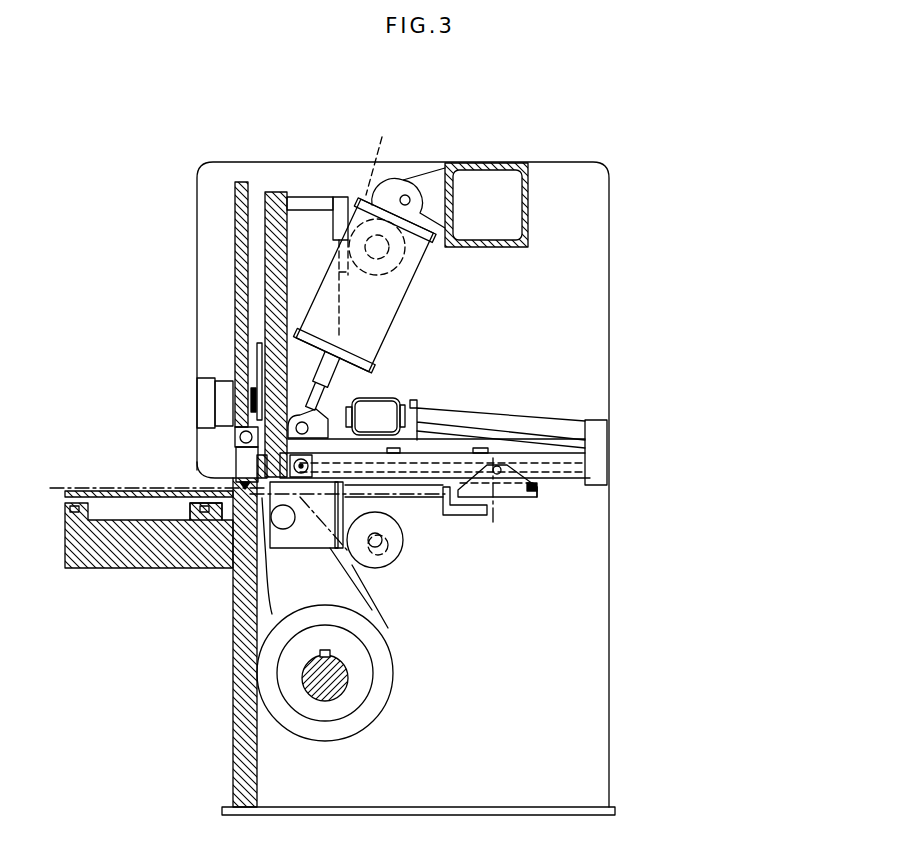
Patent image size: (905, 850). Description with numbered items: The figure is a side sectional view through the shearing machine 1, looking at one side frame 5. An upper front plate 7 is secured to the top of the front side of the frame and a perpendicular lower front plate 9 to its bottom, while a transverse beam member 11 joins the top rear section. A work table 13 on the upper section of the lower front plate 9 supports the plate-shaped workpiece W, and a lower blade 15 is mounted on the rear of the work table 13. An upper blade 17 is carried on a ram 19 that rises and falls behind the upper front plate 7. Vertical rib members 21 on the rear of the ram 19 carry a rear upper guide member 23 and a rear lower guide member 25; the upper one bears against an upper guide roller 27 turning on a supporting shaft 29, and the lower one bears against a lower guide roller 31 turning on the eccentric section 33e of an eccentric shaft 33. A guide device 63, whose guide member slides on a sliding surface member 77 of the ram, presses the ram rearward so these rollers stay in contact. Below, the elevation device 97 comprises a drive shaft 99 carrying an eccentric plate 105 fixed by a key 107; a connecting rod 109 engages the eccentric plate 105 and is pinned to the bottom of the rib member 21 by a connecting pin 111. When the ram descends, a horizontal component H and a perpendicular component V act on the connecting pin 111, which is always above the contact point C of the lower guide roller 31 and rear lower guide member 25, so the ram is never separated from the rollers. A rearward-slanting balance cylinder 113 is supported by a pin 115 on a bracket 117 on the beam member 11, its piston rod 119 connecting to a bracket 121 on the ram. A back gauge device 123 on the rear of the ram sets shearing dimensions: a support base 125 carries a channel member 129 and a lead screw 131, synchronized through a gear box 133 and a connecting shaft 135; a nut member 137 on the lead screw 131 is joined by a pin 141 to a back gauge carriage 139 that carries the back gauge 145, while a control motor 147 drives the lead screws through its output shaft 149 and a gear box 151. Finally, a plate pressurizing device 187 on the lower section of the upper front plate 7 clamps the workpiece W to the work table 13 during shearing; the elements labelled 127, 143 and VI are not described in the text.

The shearing machine 1 is at (523, 130).
The side frame 5 is at (418, 728).
The upper front plate 7 is at (237, 211).
The lower front plate 9 is at (236, 752).
The beam member 11 is at (528, 188).
The work table 13 is at (98, 560).
The lower blade 15 is at (252, 512).
The upper blade 17 is at (255, 466).
The ram 19 is at (270, 258).
The rib member 21 is at (310, 210).
The rear upper guide member 23 is at (343, 198).
The rear lower guide member 25 is at (376, 587).
The upper guide roller 27 is at (381, 153).
The supporting shaft 29 is at (398, 253).
The lower guide roller 31 is at (387, 566).
The eccentric shaft 33 is at (383, 540).
The eccentric section 33e is at (390, 550).
The guide device 63 is at (194, 373).
The sliding surface member 77 is at (257, 345).
The elevation device 97 is at (399, 684).
The drive shaft 99 is at (345, 696).
The eccentric plate 105 is at (365, 688).
The key 107 is at (297, 691).
The connecting rod 109 is at (390, 645).
The connecting pin 111 is at (287, 529).
The balance cylinder 113 is at (404, 289).
The pin 115 is at (407, 195).
The bracket 117 is at (433, 187).
The piston rod 119 is at (330, 368).
The bracket 121 is at (313, 456).
The back gauge device 123 is at (534, 500).
The support base 125 is at (507, 430).
The lower slide rail 127 is at (410, 490).
The channel member 129 is at (512, 445).
The lead screw 131 is at (408, 465).
The gear box 133 is at (283, 396).
The connecting shaft 135 is at (373, 416).
The nut member 137 is at (540, 488).
The back gauge carriage 139 is at (509, 500).
The pin 141 is at (538, 489).
The slider pin 143 is at (493, 500).
The back gauge 145 is at (450, 509).
The control motor 147 is at (393, 406).
The output shaft 149 is at (412, 400).
The gear box 151 is at (600, 453).
The plate pressurizing device 187 is at (238, 477).
The workpiece W is at (80, 487).
The point of contact C is at (347, 522).
The horizontal component H is at (284, 517).
The perpendicular component V is at (283, 518).
The view direction VI is at (609, 479).